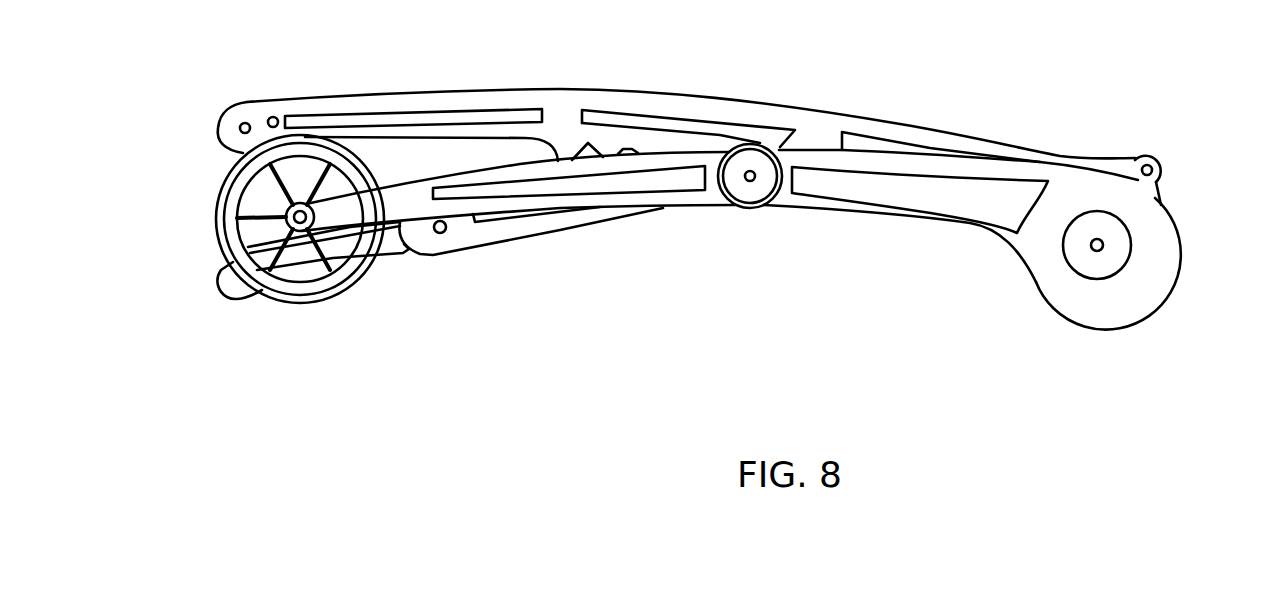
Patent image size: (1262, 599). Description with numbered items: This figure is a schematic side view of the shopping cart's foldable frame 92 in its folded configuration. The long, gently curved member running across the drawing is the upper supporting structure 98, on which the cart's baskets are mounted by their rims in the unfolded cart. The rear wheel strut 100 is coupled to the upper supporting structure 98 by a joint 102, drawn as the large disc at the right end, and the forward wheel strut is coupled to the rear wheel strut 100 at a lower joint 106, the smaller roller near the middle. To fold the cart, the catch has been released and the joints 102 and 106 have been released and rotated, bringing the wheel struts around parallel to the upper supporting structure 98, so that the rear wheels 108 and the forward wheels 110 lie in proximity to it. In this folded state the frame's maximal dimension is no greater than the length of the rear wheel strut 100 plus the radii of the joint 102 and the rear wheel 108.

The foldable frame 92 is at (1099, 60).
The upper supporting structure 98 is at (725, 95).
The rear wheel strut 100 is at (947, 224).
The joint 102 is at (1133, 241).
The lower joint 106 is at (745, 209).
The rear wheels 108 is at (327, 305).
The forward wheels 110 is at (221, 288).